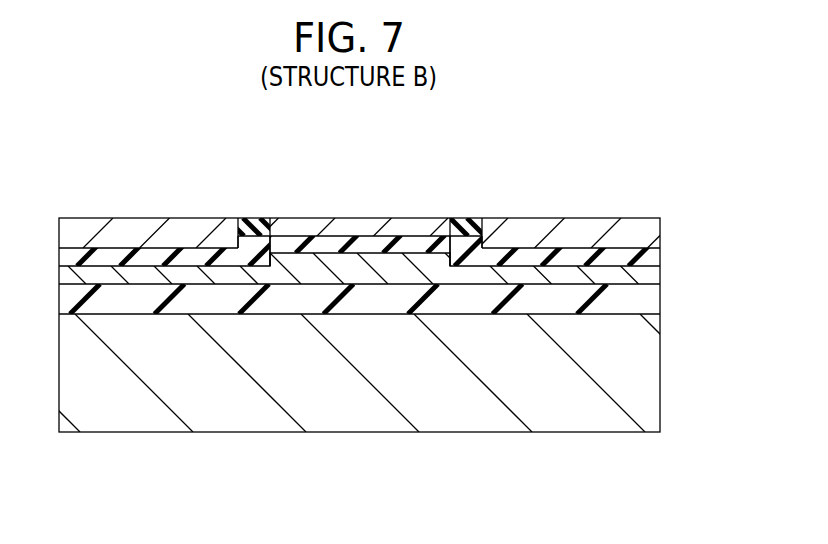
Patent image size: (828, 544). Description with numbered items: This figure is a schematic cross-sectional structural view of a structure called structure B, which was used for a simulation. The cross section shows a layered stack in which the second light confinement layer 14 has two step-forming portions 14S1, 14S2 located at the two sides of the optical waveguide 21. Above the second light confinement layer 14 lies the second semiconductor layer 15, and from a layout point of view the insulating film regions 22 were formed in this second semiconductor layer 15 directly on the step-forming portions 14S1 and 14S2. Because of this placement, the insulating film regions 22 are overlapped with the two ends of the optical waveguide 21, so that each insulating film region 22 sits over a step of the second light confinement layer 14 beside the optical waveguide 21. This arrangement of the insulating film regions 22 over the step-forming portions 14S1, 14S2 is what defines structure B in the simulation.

The second light confinement layer 14 is at (650, 258).
The step-forming portion 14S1 is at (247, 247).
The step-forming portion 14S2 is at (462, 247).
The second semiconductor layer 15 is at (650, 232).
The optical waveguide 21 is at (455, 285).
The insulating film region 22 is at (258, 218).